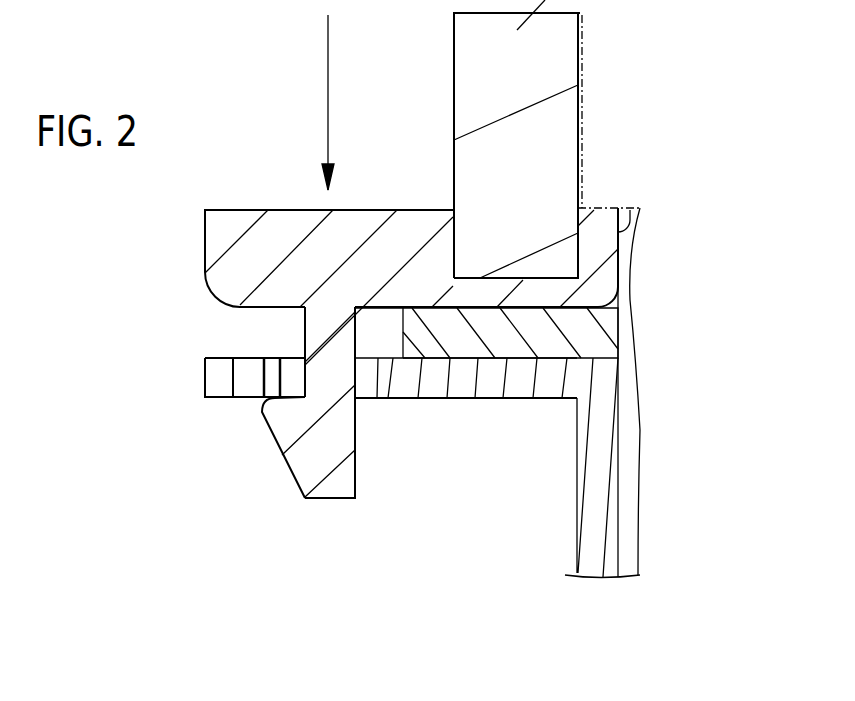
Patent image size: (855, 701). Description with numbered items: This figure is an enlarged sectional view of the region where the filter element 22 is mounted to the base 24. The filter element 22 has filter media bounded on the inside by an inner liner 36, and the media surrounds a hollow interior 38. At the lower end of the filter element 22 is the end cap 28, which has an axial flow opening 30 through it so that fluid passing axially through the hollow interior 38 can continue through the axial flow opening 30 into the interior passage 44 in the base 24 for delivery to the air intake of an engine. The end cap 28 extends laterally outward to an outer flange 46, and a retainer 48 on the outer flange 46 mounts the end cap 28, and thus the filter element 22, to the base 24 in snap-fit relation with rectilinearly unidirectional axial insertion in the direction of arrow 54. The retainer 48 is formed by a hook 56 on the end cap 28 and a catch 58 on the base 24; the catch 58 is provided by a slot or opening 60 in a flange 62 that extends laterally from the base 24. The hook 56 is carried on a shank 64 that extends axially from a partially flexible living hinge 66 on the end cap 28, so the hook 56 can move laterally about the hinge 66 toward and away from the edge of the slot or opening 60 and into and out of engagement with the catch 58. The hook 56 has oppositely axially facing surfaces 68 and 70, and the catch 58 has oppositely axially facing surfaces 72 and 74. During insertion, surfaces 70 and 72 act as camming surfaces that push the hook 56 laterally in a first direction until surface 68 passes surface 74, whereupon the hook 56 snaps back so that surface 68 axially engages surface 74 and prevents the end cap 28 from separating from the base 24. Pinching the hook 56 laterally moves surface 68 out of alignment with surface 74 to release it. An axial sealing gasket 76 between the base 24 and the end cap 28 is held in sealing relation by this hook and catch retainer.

The filter element 22 is at (453, 70).
The base 24 is at (577, 483).
The second end cap 28 is at (405, 208).
The axial flow opening 30 is at (627, 238).
The inner liner 36 is at (583, 50).
The hollow interior 38 is at (667, 138).
The interior passage 44 is at (669, 500).
The outer flange 46 is at (218, 236).
The retainer 48 is at (304, 482).
The axial insertion arrow 54 is at (328, 115).
The hook 56 is at (263, 430).
The catch 58 is at (265, 385).
The slot or opening 60 is at (292, 385).
The flange 62 is at (215, 382).
The shank 64 is at (338, 357).
The hinge 66 is at (328, 325).
The hook surface 68 is at (278, 405).
The hook camming surface 70 is at (266, 452).
The catch camming surface 72 is at (283, 358).
The catch retaining surface 74 is at (272, 378).
The axial sealing gasket 76 is at (607, 327).